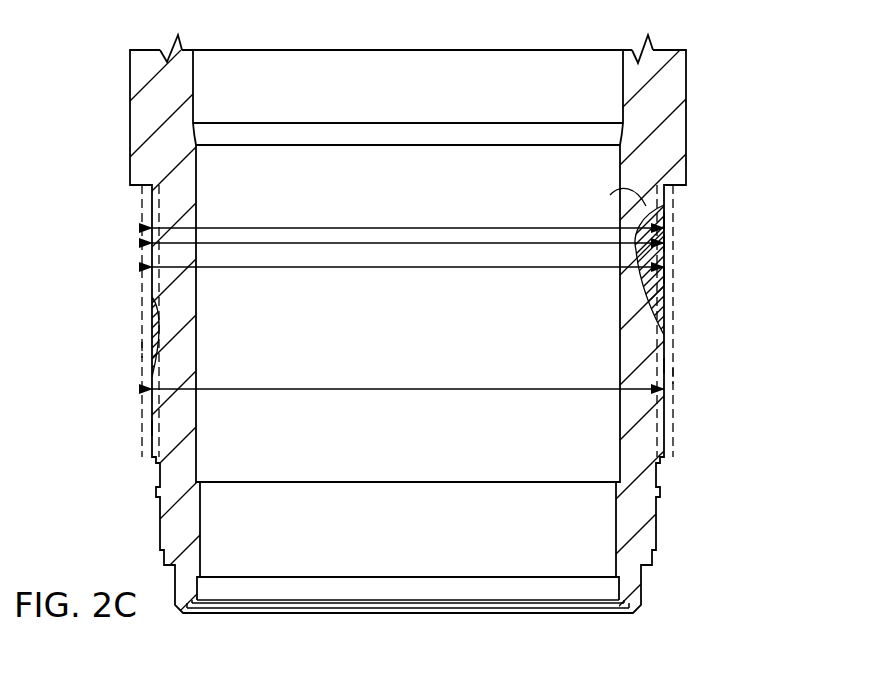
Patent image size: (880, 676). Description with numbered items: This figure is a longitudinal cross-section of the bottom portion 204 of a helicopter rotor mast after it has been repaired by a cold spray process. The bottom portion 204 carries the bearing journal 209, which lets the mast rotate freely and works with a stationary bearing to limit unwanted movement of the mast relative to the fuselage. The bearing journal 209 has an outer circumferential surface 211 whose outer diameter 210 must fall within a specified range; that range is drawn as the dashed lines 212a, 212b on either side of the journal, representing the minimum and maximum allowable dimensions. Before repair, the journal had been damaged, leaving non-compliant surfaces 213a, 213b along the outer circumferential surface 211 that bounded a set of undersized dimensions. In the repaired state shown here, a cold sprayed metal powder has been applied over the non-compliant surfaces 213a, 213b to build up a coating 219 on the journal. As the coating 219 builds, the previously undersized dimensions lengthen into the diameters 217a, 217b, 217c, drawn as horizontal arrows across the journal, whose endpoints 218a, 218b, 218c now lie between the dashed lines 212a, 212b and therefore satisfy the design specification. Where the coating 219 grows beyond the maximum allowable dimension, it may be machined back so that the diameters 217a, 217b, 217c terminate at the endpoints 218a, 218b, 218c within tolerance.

The bottom portion 204 is at (756, 109).
The bearing journal 209 is at (121, 293).
The outer diameter 210 is at (480, 389).
The outer circumferential surface 211 is at (668, 420).
The dashed line 212a is at (658, 366).
The dashed line 212b is at (673, 375).
The non-compliant surface 213a is at (667, 258).
The non-compliant surface 213b is at (152, 318).
The diameter 217a is at (290, 228).
The diameter 217b is at (456, 228).
The diameter 217c is at (567, 270).
The endpoint 218a is at (666, 221).
The endpoint 218b is at (667, 243).
The endpoint 218c is at (667, 275).
The coating 219 is at (612, 194).